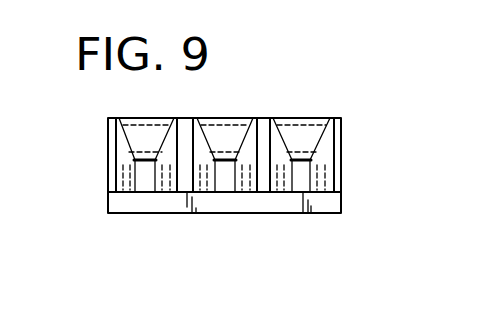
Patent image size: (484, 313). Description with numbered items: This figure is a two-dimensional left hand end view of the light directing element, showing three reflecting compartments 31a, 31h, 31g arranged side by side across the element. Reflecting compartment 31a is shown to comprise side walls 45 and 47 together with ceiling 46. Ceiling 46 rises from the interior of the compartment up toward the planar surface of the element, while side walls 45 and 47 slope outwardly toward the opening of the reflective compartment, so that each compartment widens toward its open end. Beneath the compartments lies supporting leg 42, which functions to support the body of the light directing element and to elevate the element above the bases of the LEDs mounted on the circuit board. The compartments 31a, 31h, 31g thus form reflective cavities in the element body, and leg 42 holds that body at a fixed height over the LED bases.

The reflecting compartment 31a is at (140, 134).
The reflecting compartment 31h is at (227, 136).
The reflecting compartment 31g is at (301, 134).
The ceiling 46 is at (137, 159).
The side wall 45 is at (124, 192).
The side wall 47 is at (163, 192).
The supporting leg 42 is at (327, 207).